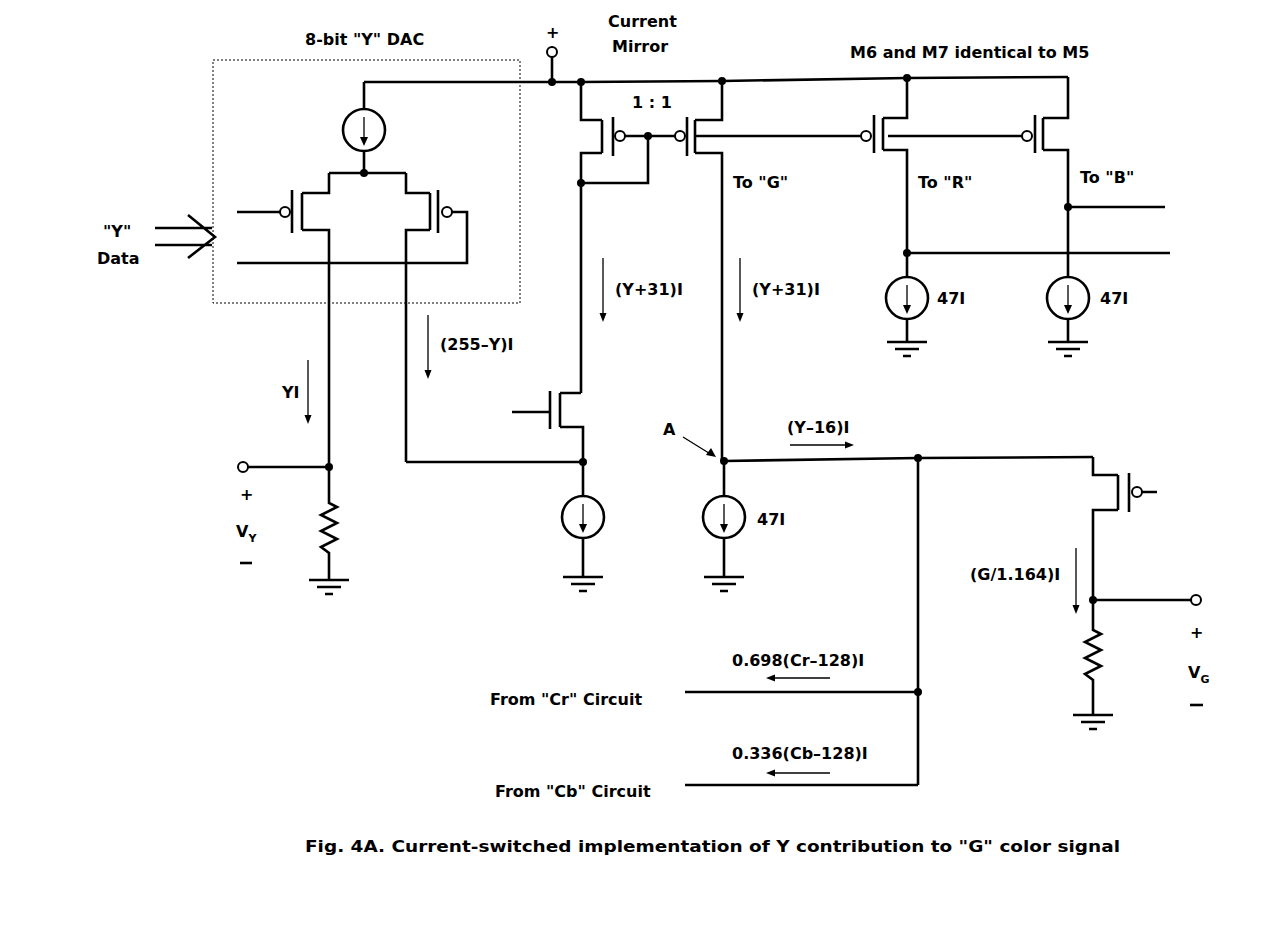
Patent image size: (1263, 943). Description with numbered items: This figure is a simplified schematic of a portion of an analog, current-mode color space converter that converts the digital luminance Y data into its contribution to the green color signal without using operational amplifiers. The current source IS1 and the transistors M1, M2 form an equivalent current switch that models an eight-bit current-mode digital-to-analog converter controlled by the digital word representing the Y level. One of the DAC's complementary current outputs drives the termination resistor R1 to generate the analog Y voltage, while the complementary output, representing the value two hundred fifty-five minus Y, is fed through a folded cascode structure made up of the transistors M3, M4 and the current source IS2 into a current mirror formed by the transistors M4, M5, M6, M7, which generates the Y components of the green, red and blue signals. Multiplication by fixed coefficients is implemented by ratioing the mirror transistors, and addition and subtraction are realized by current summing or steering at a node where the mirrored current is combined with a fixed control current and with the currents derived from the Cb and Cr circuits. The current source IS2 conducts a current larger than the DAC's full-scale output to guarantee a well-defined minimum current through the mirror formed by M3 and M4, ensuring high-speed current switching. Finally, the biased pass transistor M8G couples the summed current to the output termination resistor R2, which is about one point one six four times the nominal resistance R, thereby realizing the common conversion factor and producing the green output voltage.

The transistor M1 is at (296, 320).
The transistor M2 is at (352, 317).
The transistor M3 is at (529, 426).
The transistor M4 is at (610, 237).
The current mirror transistor M5 is at (768, 271).
The current mirror transistor M6 is at (1015, 217).
The current mirror transistor M7 is at (1093, 216).
The pass transistor M8G is at (1139, 528).
The termination resistor R1 is at (321, 528).
The output termination resistor R2 is at (1078, 662).
The current source IS1 is at (410, 127).
The current source IS2 is at (533, 526).